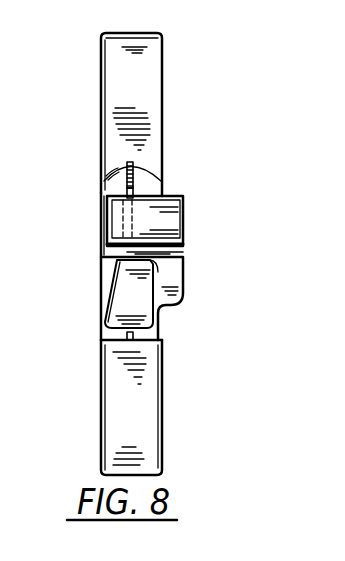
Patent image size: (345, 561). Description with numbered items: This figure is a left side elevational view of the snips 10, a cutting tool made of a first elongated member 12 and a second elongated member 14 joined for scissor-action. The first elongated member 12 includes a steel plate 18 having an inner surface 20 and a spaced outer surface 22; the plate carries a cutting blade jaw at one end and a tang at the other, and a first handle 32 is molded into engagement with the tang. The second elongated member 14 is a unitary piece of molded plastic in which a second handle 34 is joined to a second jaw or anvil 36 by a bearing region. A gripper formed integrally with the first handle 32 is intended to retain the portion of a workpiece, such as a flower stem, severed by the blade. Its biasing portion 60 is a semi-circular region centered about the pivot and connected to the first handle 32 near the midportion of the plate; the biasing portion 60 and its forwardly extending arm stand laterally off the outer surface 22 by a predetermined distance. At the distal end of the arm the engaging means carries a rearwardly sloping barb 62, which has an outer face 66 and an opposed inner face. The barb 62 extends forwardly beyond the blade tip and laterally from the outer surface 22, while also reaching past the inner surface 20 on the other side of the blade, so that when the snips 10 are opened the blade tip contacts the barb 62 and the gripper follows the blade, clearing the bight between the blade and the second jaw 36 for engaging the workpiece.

The snips 10 is at (180, 37).
The first elongated member 12 is at (172, 377).
The second elongated member 14 is at (172, 106).
The steel plate 18 is at (127, 184).
The inner surface 20 is at (126, 190).
The outer surface 22 is at (140, 182).
The first handle 32 is at (156, 411).
The second handle 34 is at (163, 73).
The second jaw 36 is at (124, 293).
The biasing portion 60 is at (174, 279).
The barb 62 is at (168, 231).
The outer face 66 is at (176, 213).